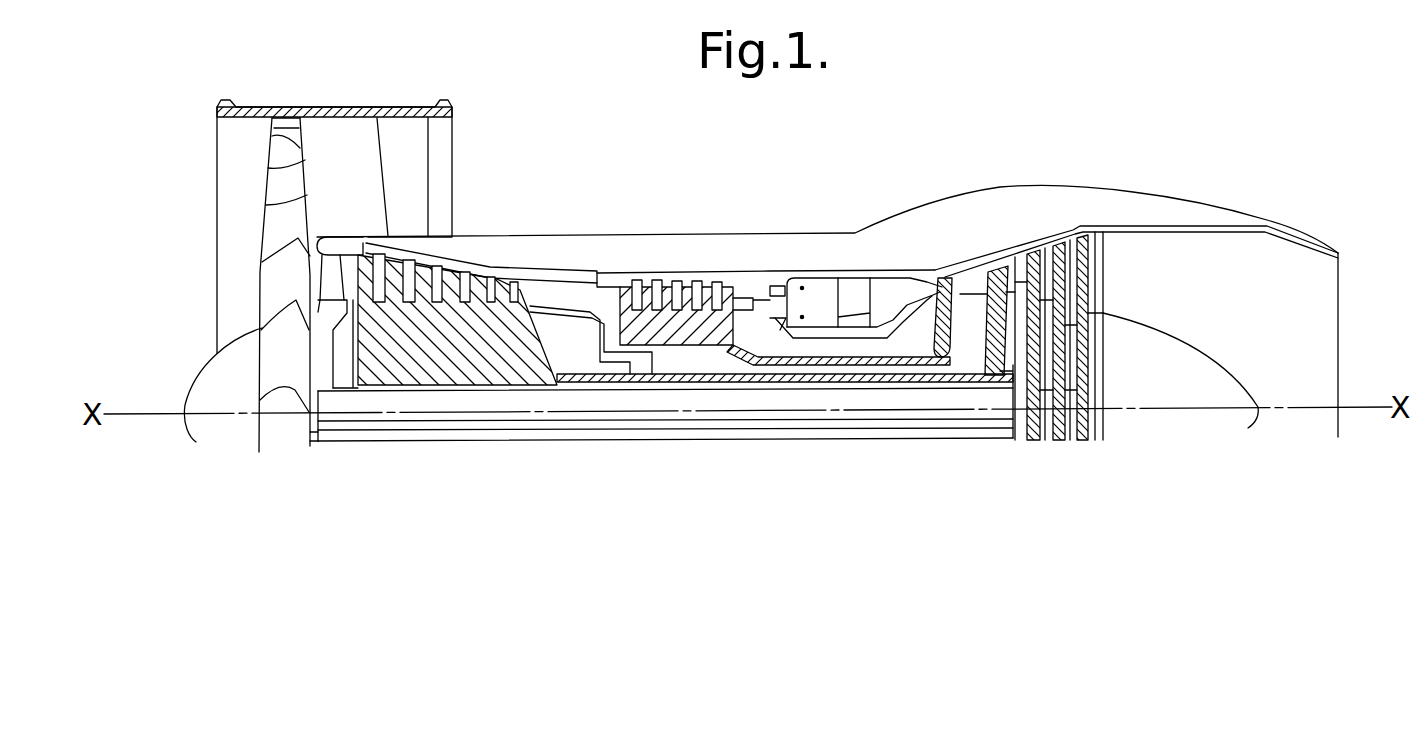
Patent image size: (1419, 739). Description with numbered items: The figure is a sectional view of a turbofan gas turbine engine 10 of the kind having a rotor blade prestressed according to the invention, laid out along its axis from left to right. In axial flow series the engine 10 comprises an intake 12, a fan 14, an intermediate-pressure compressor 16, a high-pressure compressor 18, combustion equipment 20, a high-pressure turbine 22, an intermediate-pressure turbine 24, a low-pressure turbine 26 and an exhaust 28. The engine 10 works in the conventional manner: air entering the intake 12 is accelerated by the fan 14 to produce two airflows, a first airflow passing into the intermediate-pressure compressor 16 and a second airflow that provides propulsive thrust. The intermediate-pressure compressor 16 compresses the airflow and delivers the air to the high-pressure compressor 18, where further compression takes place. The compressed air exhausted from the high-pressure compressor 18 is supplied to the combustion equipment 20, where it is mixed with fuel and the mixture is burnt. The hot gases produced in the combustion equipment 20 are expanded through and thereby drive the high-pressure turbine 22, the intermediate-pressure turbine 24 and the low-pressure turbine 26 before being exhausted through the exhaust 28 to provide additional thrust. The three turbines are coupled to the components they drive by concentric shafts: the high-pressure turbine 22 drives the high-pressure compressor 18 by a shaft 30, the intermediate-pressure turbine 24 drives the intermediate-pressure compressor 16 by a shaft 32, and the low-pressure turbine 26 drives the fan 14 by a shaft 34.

The turbofan gas turbine engine 10 is at (618, 188).
The intake 12 is at (205, 248).
The fan 14 is at (290, 150).
The intermediate-pressure compressor 16 is at (443, 327).
The high-pressure compressor 18 is at (680, 285).
The combustion equipment 20 is at (856, 262).
The high-pressure turbine 22 is at (943, 277).
The intermediate-pressure turbine 24 is at (1000, 268).
The low-pressure turbine 26 is at (1068, 290).
The exhaust 28 is at (1312, 348).
The shaft 30 is at (852, 366).
The shaft 32 is at (727, 381).
The shaft 34 is at (570, 431).